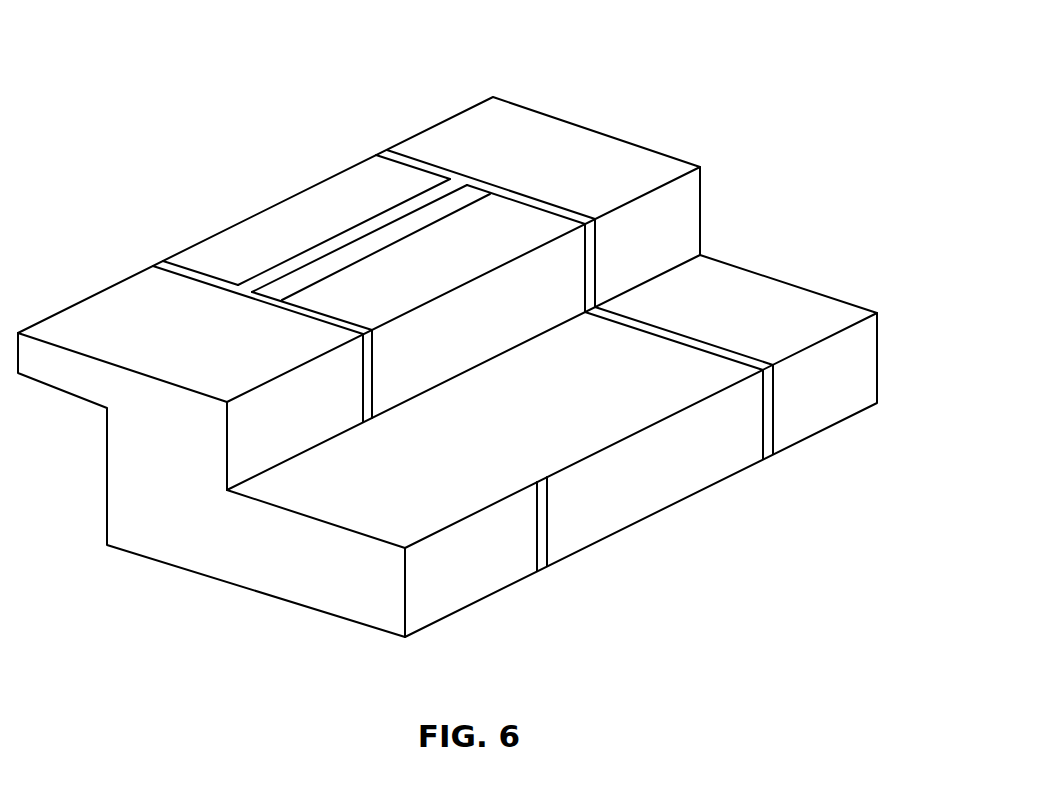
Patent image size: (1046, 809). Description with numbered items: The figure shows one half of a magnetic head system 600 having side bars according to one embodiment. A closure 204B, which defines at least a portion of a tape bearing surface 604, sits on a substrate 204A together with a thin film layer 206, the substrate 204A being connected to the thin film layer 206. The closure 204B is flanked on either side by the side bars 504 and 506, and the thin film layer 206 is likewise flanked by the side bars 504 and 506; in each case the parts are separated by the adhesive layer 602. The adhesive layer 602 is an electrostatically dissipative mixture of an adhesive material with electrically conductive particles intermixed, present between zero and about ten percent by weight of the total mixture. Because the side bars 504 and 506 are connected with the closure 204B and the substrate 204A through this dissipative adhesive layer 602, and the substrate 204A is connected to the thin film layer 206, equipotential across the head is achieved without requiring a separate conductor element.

The magnetic head system 600 is at (808, 452).
The side bar 504 is at (116, 546).
The side bar 506 is at (568, 121).
The substrate 204A is at (655, 474).
The closure 204B is at (347, 187).
The thin film layer 206 is at (315, 272).
The adhesive layer 602 is at (347, 237).
The tape bearing surface 604 is at (217, 236).